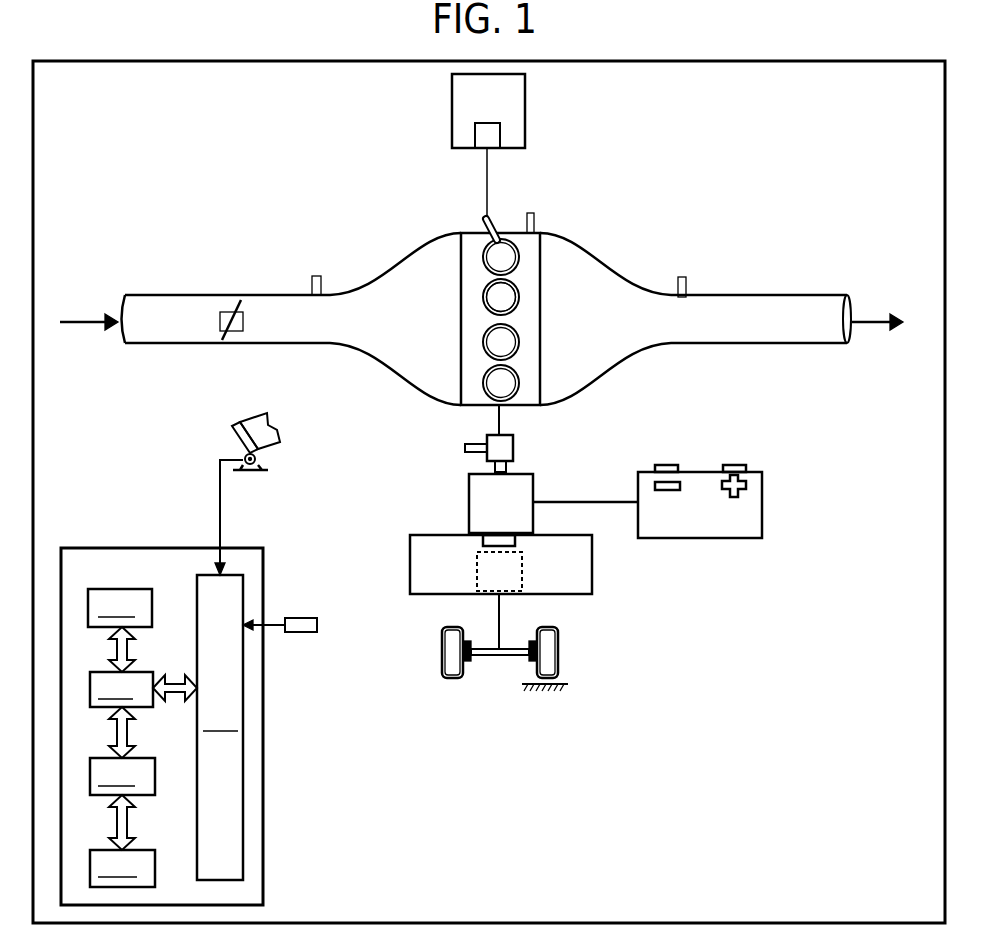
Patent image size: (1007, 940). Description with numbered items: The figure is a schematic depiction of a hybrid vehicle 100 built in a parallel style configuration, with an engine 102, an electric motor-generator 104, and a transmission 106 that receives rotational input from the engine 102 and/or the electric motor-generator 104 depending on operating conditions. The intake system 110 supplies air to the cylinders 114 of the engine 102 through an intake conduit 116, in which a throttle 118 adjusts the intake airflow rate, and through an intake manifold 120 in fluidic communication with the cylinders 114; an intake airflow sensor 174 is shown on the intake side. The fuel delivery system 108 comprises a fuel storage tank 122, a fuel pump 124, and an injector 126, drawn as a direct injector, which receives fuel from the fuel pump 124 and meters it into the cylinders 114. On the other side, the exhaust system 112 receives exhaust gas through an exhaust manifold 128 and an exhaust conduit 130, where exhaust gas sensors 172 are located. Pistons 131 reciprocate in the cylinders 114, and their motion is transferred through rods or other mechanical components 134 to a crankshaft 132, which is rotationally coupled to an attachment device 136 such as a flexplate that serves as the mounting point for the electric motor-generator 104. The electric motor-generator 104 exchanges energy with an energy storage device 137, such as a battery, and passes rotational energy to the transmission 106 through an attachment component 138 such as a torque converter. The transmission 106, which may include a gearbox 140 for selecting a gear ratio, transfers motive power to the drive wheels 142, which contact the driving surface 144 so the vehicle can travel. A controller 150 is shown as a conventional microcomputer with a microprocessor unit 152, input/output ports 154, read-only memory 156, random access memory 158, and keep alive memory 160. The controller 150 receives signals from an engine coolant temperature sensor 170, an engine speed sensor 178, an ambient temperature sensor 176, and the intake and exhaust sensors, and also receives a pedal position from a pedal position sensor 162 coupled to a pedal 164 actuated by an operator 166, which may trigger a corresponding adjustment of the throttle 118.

The vehicle 100 is at (82, 61).
The engine 102 is at (462, 233).
The electric motor-generator 104 is at (469, 500).
The transmission 106 is at (410, 560).
The fuel delivery system 108 is at (504, 157).
The intake system 110 is at (285, 218).
The exhaust system 112 is at (755, 210).
The cylinders 114 is at (519, 292).
The intake conduit 116 is at (260, 343).
The throttle 118 is at (262, 322).
The intake manifold 120 is at (438, 328).
The fuel storage tank 122 is at (452, 110).
The fuel pump 124 is at (485, 123).
The injector 126 is at (498, 222).
The exhaust manifold 128 is at (621, 328).
The exhaust conduit 130 is at (740, 343).
The pistons 131 is at (483, 292).
The crankshaft 132 is at (513, 450).
The rods and/or other suitable mechanical components 134 is at (500, 410).
The attachment device 136 is at (506, 467).
The energy storage device 137 is at (692, 538).
The attachment component 138 is at (483, 540).
The gearbox 140 is at (477, 565).
The drive wheels 142 is at (560, 652).
The driving surface 144 is at (530, 682).
The controller 150 is at (63, 548).
The microprocessor unit 152 is at (143, 672).
The input/output ports 154 is at (197, 605).
The read-only memory 156 is at (94, 589).
The random access memory 158 is at (143, 758).
The keep alive memory 160 is at (143, 850).
The pedal position sensor 162 is at (262, 463).
The pedal 164 is at (233, 440).
The operator 166 is at (276, 428).
The engine coolant temperature sensor 170 is at (535, 220).
The exhaust gas sensors 172 is at (688, 285).
The intake airflow sensor 174 is at (312, 286).
The ambient temperature sensor 176 is at (303, 618).
The engine speed sensor 178 is at (465, 447).